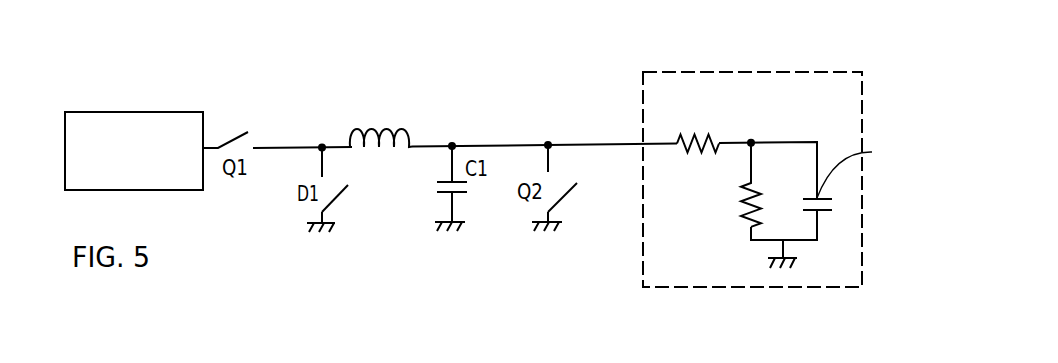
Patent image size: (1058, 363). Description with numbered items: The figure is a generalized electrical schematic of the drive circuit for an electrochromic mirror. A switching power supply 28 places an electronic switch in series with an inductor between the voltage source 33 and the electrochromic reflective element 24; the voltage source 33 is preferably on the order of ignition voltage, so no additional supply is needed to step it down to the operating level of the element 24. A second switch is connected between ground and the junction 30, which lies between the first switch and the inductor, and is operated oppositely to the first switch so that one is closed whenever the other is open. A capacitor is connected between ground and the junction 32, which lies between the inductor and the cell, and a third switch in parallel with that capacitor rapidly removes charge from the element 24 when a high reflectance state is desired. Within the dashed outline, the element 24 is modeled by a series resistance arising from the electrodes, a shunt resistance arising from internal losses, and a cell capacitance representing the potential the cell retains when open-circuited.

The voltage source 33 is at (112, 108).
The junction 30 is at (295, 145).
The junction 32 is at (433, 145).
The switching power supply 28 is at (510, 124).
The electrochromic reflective element 24 is at (698, 72).